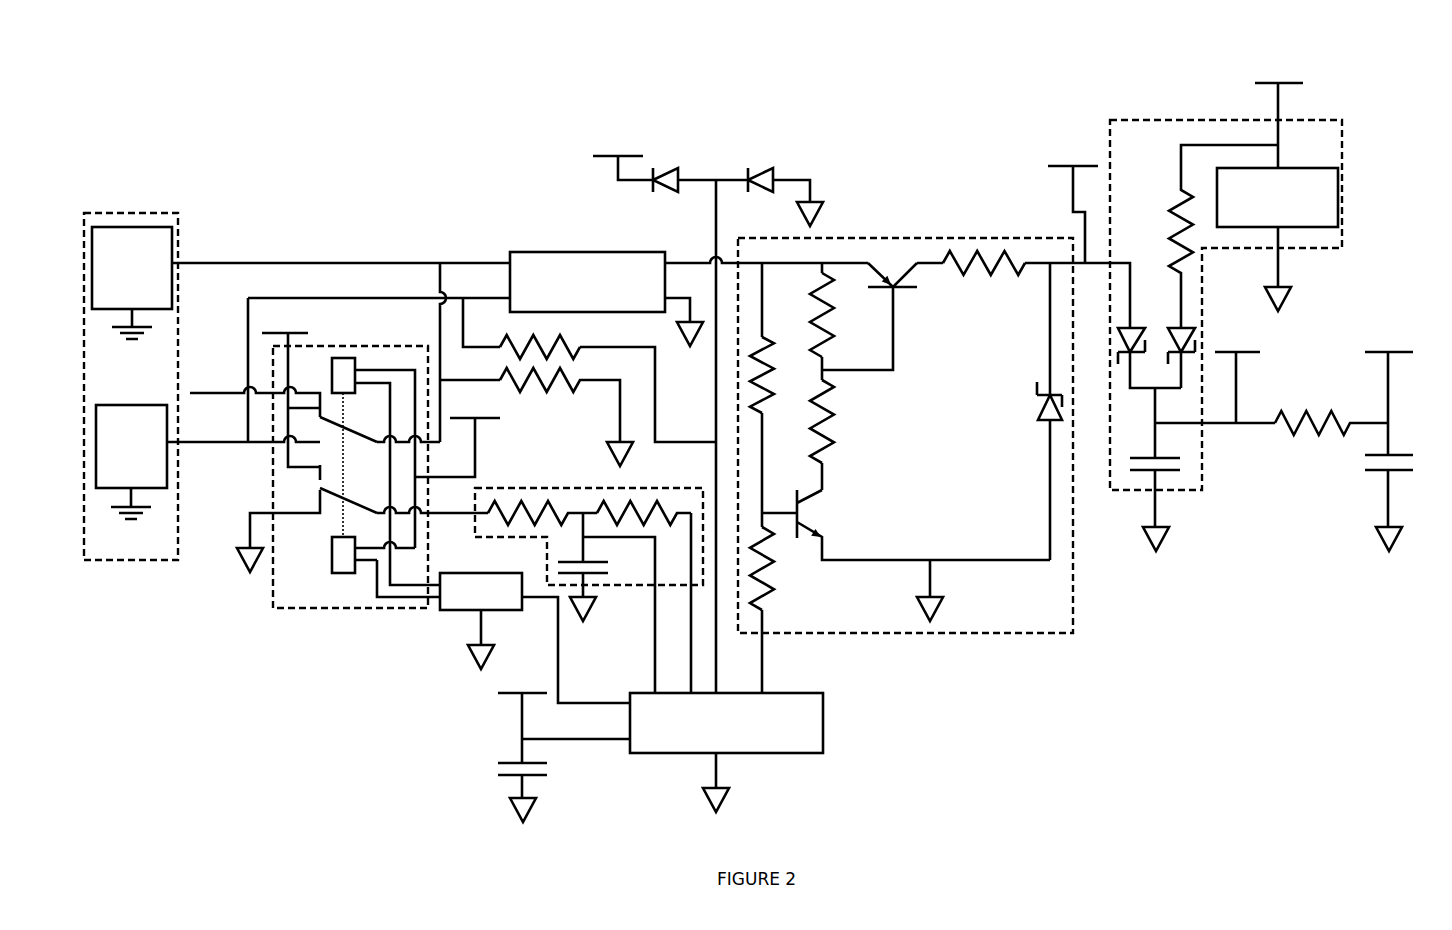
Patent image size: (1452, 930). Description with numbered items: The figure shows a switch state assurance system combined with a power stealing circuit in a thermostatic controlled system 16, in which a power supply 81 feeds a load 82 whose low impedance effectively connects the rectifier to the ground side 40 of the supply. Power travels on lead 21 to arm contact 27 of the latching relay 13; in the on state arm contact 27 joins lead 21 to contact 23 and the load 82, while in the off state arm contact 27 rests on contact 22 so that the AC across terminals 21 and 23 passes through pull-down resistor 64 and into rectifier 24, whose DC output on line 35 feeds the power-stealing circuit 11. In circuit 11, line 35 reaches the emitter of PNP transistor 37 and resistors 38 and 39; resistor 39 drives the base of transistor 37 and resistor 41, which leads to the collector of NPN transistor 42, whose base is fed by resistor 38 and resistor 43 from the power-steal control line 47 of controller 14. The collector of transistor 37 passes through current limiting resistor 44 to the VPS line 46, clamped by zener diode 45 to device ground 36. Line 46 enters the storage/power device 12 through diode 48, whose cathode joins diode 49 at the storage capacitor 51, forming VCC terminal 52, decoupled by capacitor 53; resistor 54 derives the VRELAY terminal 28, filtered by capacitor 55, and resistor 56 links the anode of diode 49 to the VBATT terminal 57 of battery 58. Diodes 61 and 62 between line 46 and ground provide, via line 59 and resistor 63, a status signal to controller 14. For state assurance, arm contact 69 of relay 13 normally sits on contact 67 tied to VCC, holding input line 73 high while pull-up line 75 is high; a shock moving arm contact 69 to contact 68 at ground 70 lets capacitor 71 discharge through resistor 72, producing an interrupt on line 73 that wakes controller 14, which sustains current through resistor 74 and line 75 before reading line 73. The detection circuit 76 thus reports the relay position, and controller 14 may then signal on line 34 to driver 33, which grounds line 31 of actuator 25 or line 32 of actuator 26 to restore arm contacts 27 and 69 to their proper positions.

The power-stealing circuit 11 is at (855, 238).
The storage/power device 12 is at (1185, 120).
The relay 13 is at (345, 609).
The controller 14 is at (823, 720).
The controlled system 16 is at (160, 213).
The lead 21 is at (282, 263).
The relay contact 22 is at (225, 393).
The relay contact or lead 23 is at (237, 442).
The rectifier 24 is at (630, 258).
The actuator 25 is at (332, 365).
The actuator 26 is at (332, 546).
The arm contact 27 is at (345, 432).
The VRELAY terminal 28 is at (478, 430).
The line 31 is at (375, 533).
The line 32 is at (378, 598).
The driver 33 is at (442, 573).
The line 34 is at (558, 670).
The line 35 is at (705, 260).
The device ground 36 is at (798, 202).
The PNP transistor 37 is at (895, 290).
The resistor 38 is at (765, 342).
The resistor 39 is at (815, 348).
The ground side 40 is at (105, 332).
The resistor 41 is at (835, 445).
The NPN transistor 42 is at (800, 508).
The resistor 43 is at (775, 590).
The resistor 44 is at (975, 275).
The zener diode 45 is at (1038, 420).
The power-steal output voltage (VPS) line 46 is at (613, 163).
The power-steal control line 47 is at (762, 670).
The diode 48 is at (1140, 330).
The diode 49 is at (1182, 332).
The storage capacitor 51 is at (1150, 457).
The VCC terminal 52 is at (302, 333).
The capacitor 53 is at (510, 757).
The resistor 54 is at (1290, 433).
The capacitor 55 is at (1380, 460).
The resistor 56 is at (1170, 215).
The VBATT terminal 57 is at (1280, 100).
The battery 58 is at (1290, 178).
The line 59 is at (706, 488).
The diode 61 is at (678, 195).
The diode 62 is at (765, 180).
The resistor 63 is at (560, 333).
The pull-down resistor 64 is at (500, 372).
The contact 67 is at (318, 478).
The contact 68 is at (318, 509).
The arm contact 69 is at (343, 502).
The reference voltage or circuit ground 70 is at (238, 550).
The capacitor 71 is at (600, 585).
The resistor 72 is at (548, 498).
The state assurance input line 73 is at (655, 545).
The resistor 74 is at (627, 498).
The state assurance pull-up line 75 is at (690, 667).
The detection circuit 76 is at (497, 540).
The power 81 is at (174, 238).
The load 82 is at (160, 405).